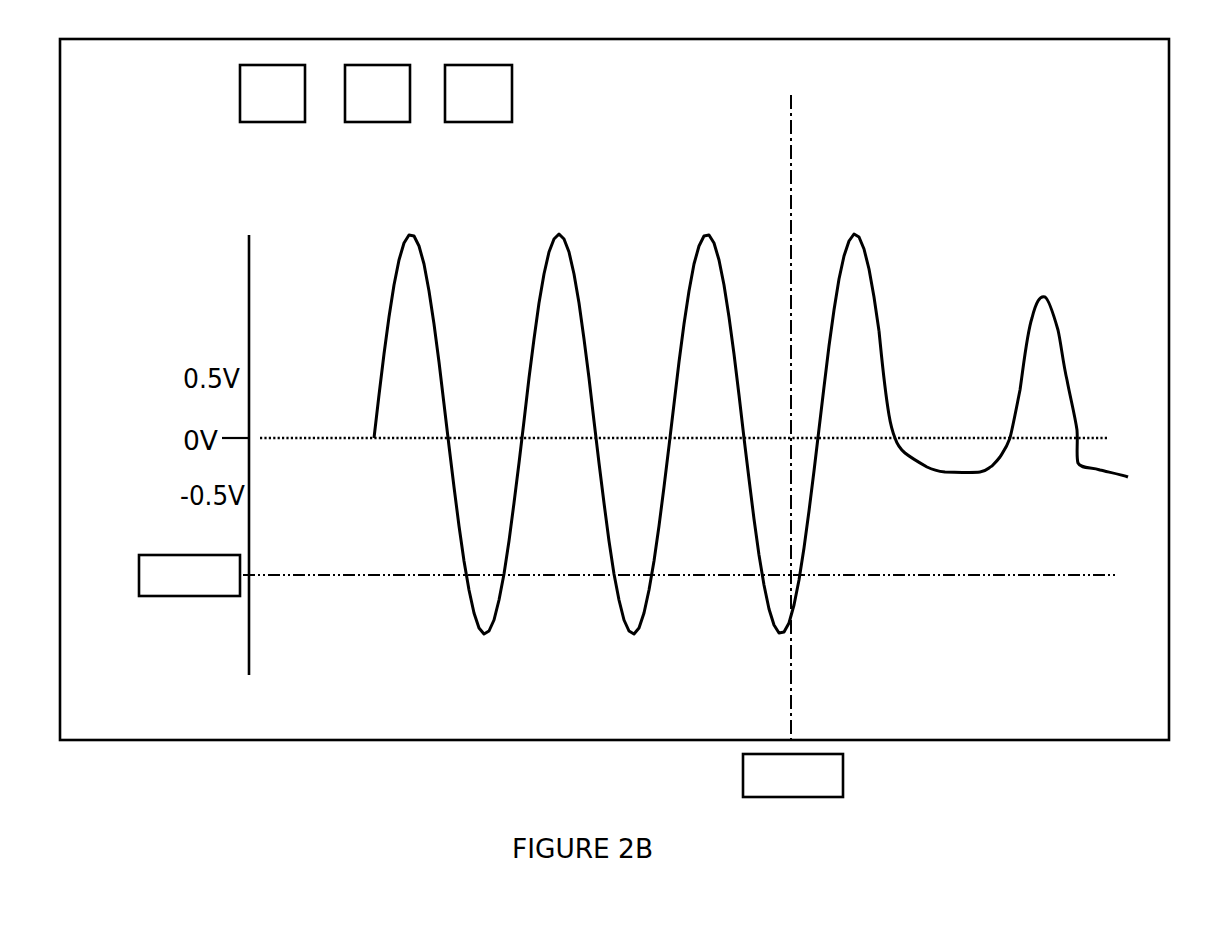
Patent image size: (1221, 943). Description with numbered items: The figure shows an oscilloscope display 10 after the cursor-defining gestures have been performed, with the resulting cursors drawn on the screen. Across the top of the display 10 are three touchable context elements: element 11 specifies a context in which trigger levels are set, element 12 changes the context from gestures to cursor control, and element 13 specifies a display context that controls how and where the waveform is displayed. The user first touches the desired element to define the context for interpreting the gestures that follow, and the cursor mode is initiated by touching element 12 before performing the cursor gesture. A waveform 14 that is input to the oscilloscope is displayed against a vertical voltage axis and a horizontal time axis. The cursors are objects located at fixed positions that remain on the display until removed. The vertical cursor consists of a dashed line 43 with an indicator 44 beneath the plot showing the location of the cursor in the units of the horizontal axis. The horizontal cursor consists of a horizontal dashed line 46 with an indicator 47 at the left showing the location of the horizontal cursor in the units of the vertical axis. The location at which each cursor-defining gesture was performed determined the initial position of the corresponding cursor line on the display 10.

The display 10 is at (1169, 156).
The element 11 is at (262, 122).
The element 12 is at (373, 122).
The element 13 is at (477, 122).
The waveform 14 is at (417, 248).
The dashed line 43 is at (791, 370).
The indicator 44 is at (843, 778).
The horizontal dashed line 46 is at (392, 575).
The indicator 47 is at (170, 596).